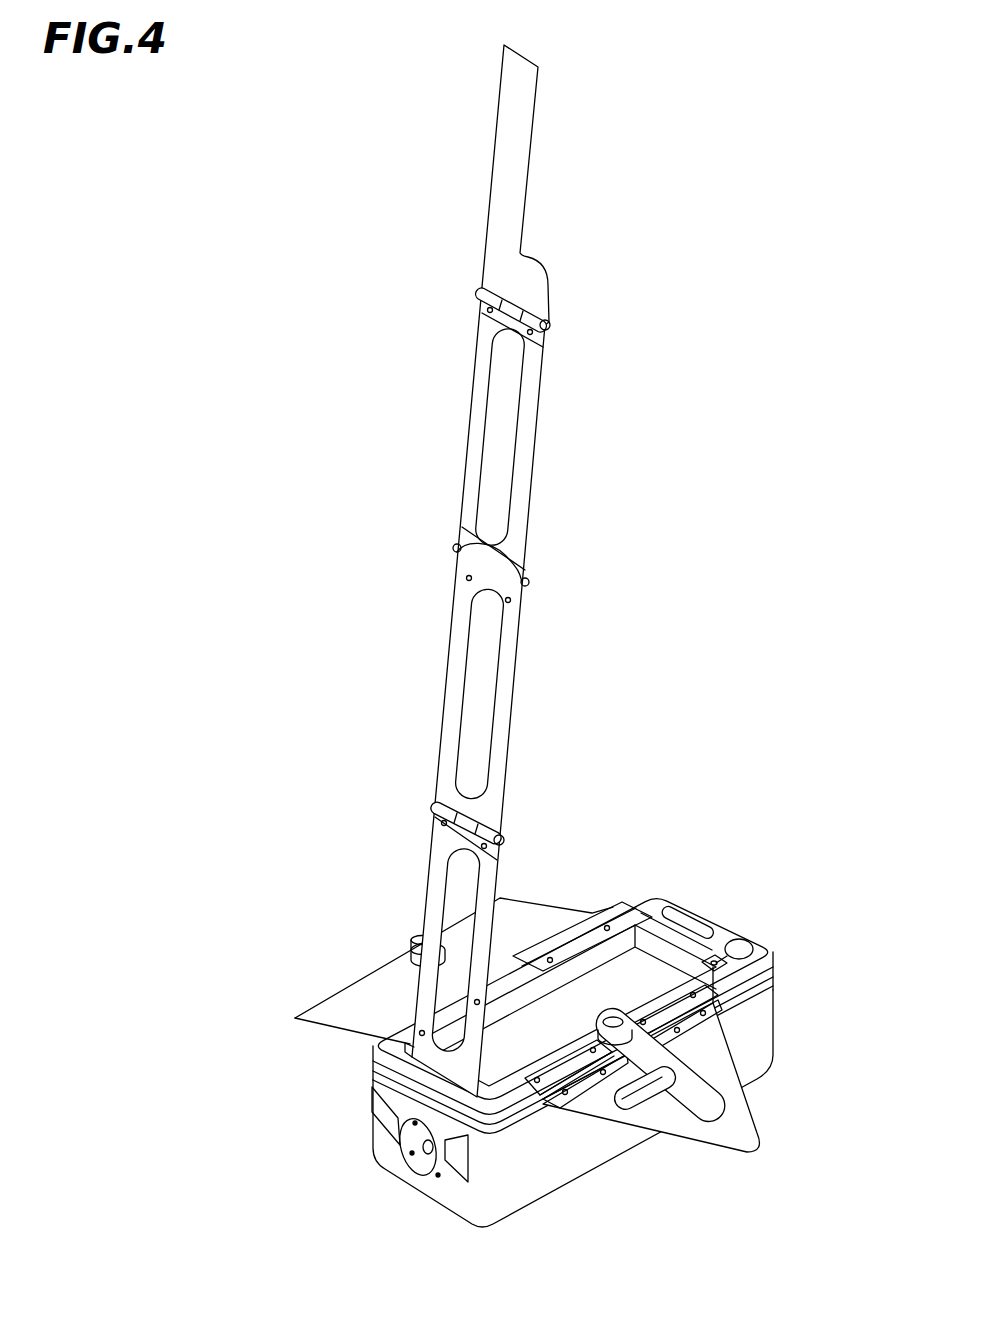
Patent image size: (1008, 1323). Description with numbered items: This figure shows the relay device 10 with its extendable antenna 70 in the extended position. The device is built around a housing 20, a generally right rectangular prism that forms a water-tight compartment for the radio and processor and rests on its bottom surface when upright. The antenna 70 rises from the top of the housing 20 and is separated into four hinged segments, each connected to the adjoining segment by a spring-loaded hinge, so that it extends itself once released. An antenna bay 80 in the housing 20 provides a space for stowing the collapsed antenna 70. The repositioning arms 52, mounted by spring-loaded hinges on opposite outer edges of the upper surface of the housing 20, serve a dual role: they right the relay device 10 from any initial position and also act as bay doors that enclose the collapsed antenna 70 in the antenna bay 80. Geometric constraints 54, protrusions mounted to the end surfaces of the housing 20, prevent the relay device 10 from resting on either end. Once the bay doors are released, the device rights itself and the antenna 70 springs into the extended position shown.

The relay device 10 is at (209, 233).
The housing 20 is at (713, 913).
The repositioning arms 52 is at (360, 1003).
The geometric constraints 54 is at (378, 1101).
The extendable antenna 70 is at (533, 166).
The antenna bay 80 is at (627, 990).